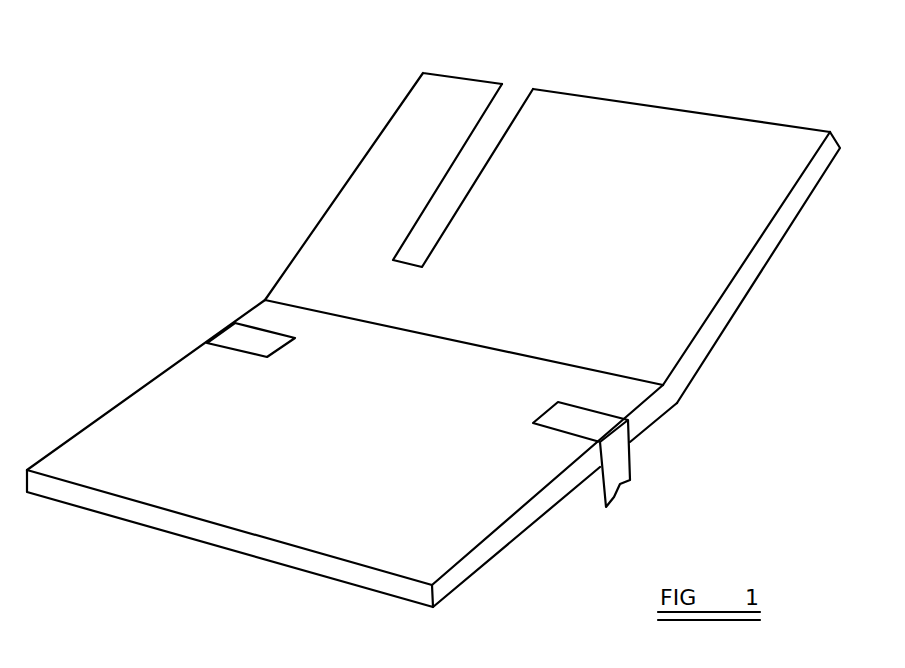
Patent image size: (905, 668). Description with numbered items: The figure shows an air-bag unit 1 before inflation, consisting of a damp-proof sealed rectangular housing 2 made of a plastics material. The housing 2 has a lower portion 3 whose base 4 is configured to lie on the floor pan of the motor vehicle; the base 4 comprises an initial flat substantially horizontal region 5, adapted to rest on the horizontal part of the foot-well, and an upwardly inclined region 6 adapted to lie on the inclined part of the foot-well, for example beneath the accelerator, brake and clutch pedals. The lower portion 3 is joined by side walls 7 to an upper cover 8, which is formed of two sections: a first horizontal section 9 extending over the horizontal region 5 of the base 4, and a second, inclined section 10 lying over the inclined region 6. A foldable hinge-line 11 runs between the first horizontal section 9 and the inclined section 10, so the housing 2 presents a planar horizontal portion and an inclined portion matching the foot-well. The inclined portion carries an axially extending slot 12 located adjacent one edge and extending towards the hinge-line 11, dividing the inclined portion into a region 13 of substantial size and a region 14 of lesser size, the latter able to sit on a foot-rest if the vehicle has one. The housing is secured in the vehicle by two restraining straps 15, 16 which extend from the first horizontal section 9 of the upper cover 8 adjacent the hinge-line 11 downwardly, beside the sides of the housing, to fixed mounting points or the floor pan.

The air-bag unit 1 is at (277, 173).
The housing 2 is at (718, 148).
The lower portion 3 is at (472, 585).
The base 4 is at (497, 553).
The flat substantially horizontal region 5 is at (558, 502).
The upwardly inclined region 6 is at (727, 327).
The side walls 7 is at (510, 522).
The upper cover 8 is at (327, 475).
The first horizontal section 9 is at (185, 462).
The inclined section 10 is at (690, 250).
The foldable hinge-line 11 is at (295, 305).
The axially extending slot 12 is at (490, 137).
The region of substantial size 13 is at (617, 143).
The region of lesser size 14 is at (453, 107).
The restraining strap 15 is at (617, 467).
The restraining strap 16 is at (235, 337).